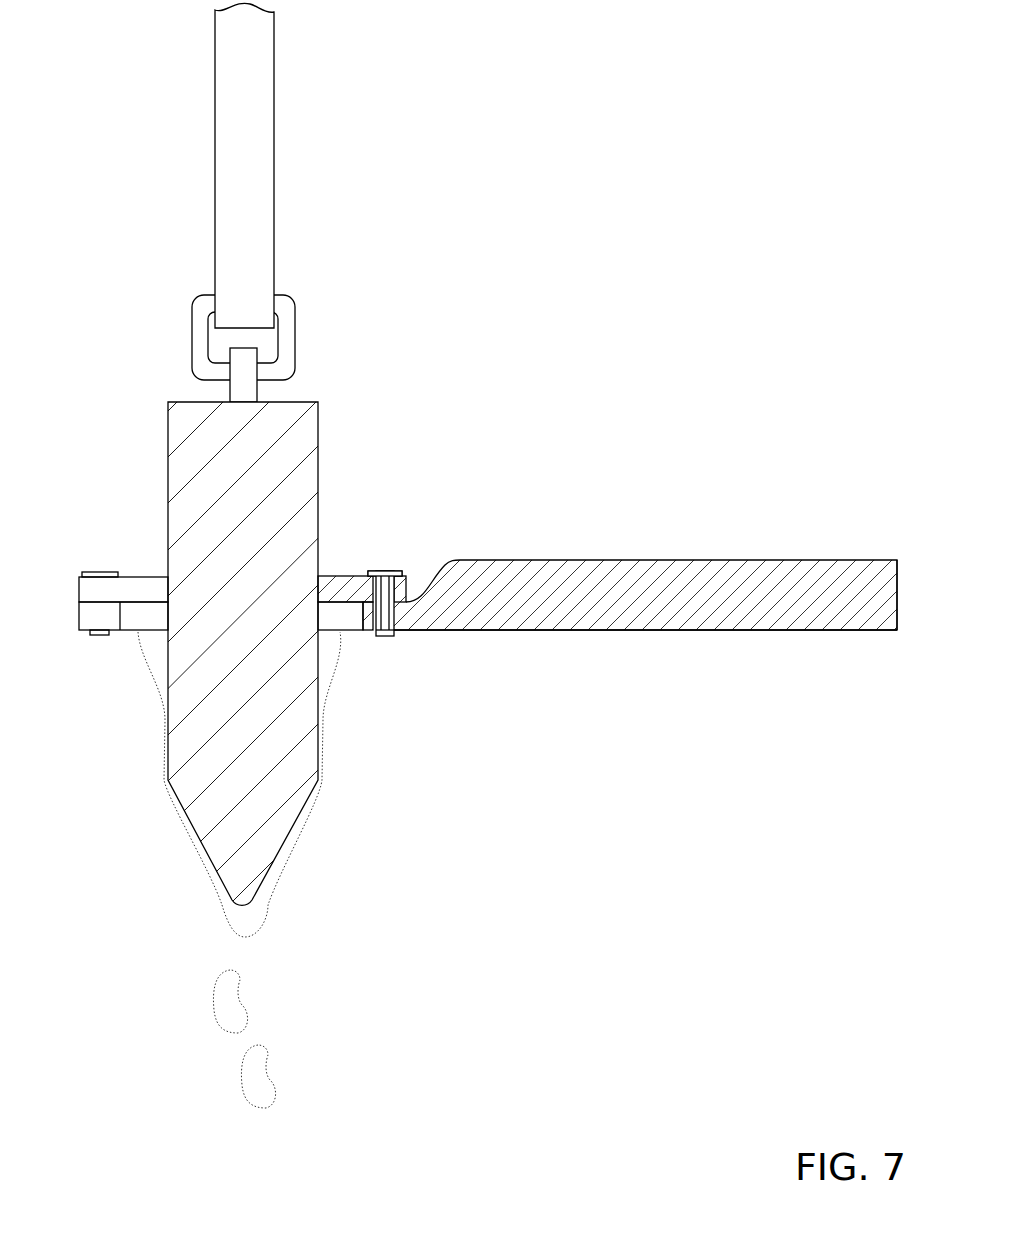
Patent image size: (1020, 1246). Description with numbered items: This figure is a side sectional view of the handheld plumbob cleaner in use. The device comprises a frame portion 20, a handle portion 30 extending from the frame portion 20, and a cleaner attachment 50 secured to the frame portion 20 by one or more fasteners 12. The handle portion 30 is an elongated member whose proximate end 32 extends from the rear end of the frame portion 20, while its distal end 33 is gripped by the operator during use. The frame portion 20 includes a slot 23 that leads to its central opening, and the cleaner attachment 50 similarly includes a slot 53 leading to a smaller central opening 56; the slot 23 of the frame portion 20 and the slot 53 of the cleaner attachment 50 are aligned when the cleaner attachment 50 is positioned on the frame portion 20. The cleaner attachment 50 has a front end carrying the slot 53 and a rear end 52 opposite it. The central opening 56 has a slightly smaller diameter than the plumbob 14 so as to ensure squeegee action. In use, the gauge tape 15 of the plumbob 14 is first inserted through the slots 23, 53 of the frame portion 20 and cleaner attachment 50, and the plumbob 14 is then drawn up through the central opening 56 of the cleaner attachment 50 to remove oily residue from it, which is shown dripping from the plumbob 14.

The fastener 12 is at (90, 572).
The plumbob 14 is at (330, 472).
The gauge tape 15 is at (255, 65).
The frame portion 20 is at (352, 636).
The slot 23 is at (105, 617).
The handle portion 30 is at (707, 636).
The proximate end 32 is at (425, 632).
The distal end 33 is at (897, 583).
The cleaner attachment 50 is at (68, 600).
The rear end 52 is at (407, 580).
The slot 53 is at (143, 592).
The central opening 56 is at (333, 585).